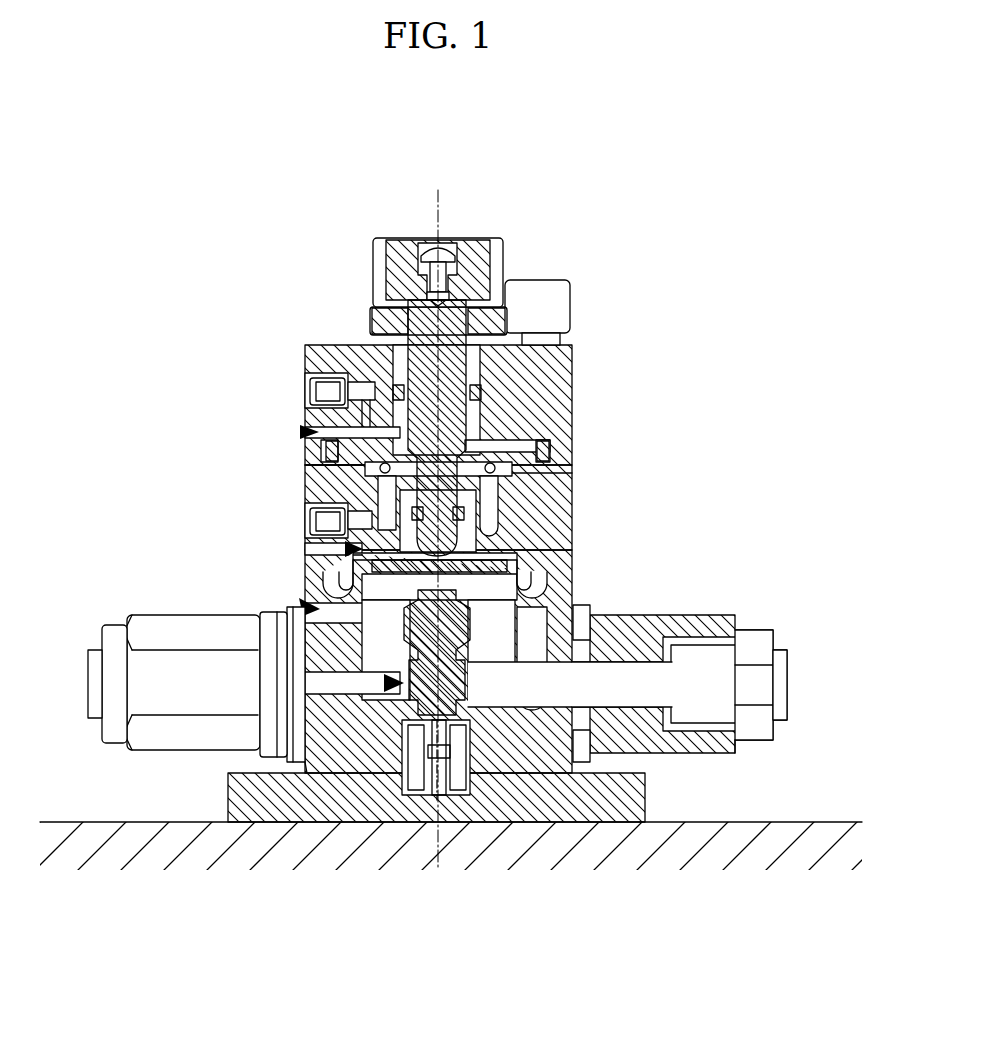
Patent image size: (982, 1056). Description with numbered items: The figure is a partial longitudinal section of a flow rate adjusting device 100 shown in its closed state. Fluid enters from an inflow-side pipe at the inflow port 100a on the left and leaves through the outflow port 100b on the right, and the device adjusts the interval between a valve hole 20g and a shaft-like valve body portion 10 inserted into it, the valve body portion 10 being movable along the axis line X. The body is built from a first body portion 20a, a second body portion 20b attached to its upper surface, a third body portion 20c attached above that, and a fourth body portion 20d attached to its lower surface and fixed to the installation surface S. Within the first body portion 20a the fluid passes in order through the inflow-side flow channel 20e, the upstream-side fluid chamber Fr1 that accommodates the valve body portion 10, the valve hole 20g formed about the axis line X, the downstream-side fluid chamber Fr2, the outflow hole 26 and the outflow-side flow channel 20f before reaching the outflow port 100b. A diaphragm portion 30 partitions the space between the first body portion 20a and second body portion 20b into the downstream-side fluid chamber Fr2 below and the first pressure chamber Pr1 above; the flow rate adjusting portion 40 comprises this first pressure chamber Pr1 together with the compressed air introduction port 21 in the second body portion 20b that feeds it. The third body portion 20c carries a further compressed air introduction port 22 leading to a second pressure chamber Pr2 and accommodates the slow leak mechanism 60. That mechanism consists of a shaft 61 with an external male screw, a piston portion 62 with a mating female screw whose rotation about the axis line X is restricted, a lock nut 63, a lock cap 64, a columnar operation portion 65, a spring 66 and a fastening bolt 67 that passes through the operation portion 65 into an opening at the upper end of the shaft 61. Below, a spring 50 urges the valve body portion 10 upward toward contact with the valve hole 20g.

The flow rate adjusting device 100 is at (708, 172).
The inflow port 100a is at (157, 612).
The outflow port 100b is at (720, 612).
The valve body portion 10 is at (462, 690).
The first body portion 20a is at (572, 603).
The second body portion 20b is at (572, 493).
The third body portion 20c is at (572, 402).
The fourth body portion 20d is at (228, 786).
The inflow-side flow channel 20e is at (342, 700).
The outflow-side flow channel 20f is at (710, 700).
The valve hole 20g is at (390, 648).
The compressed air introduction port 21 is at (320, 518).
The compressed air introduction port 22 is at (330, 398).
The outflow hole 26 is at (556, 658).
The diaphragm portion 30 is at (520, 566).
The flow rate adjusting portion 40 is at (235, 492).
The spring 50 is at (465, 782).
The slow leak mechanism 60 is at (340, 226).
The shaft 61 is at (450, 362).
The piston portion 62 is at (545, 448).
The lock nut 63 is at (370, 318).
The lock cap 64 is at (373, 268).
The operation portion 65 is at (477, 247).
The spring 66 is at (380, 467).
The fastening bolt 67 is at (445, 243).
The upstream-side fluid chamber Fr1 is at (386, 683).
The downstream-side fluid chamber Fr2 is at (302, 606).
The first pressure chamber Pr1 is at (345, 548).
The second pressure chamber Pr2 is at (300, 432).
The installation surface S is at (809, 821).
The axis line X is at (438, 208).